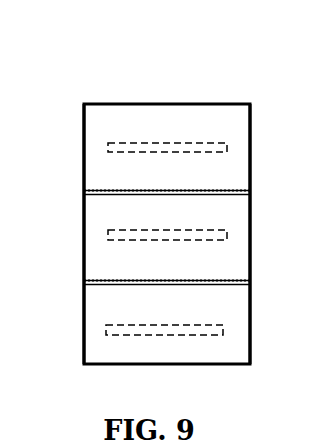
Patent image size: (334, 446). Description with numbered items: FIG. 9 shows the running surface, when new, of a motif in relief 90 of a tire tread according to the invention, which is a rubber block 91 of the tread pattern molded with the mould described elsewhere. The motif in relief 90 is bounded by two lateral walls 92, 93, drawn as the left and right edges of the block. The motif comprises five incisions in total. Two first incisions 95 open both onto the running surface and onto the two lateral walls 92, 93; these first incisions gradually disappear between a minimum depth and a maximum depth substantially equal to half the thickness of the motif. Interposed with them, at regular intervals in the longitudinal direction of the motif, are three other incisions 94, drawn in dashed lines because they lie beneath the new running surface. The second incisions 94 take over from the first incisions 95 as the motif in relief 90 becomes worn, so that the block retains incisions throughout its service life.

The panel assembly 90 is at (82, 74).
The substrate body 91 is at (212, 120).
The first side edge 92 is at (74, 170).
The second side edge 93 is at (260, 168).
The embedded elements (dashed regions) 94 is at (194, 322).
The separation lines / stripes 95 is at (108, 193).